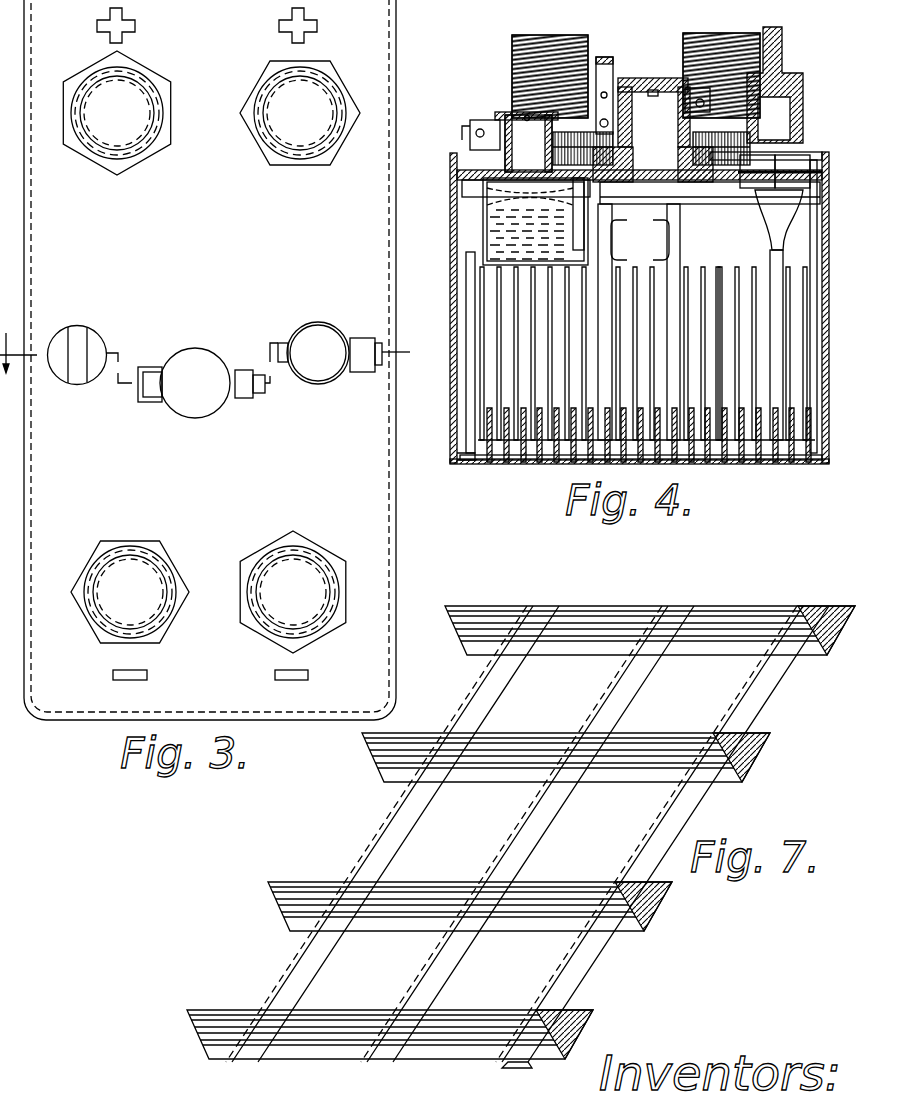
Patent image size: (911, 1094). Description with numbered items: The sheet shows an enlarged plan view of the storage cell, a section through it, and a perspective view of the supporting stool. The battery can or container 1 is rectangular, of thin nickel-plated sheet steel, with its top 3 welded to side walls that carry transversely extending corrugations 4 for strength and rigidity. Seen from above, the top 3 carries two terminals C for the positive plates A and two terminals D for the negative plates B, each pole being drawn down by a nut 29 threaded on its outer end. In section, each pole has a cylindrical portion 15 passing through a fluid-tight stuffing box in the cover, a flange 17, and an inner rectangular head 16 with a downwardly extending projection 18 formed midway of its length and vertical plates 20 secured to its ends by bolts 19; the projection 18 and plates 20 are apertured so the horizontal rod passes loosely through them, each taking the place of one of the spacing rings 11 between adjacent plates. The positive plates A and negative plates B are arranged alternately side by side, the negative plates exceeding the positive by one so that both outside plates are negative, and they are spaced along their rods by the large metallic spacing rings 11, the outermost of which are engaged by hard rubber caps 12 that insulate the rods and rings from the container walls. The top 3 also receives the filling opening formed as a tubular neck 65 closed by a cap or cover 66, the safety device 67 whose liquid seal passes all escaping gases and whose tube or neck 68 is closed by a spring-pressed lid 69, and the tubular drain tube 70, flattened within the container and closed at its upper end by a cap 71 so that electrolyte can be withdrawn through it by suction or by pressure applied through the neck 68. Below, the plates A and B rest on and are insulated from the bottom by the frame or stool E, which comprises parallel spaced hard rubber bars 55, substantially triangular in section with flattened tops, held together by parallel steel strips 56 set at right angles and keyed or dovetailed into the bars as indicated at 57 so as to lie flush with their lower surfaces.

In FIG. 3, the battery can or container 1 is at (396, 572).
In FIG. 4, the battery can or container 1 is at (830, 430).
In FIG. 3, the top 3 is at (342, 474).
In FIG. 4, the top 3 is at (467, 160).
In FIG. 3, the corrugations 4 is at (214, 353).
In FIG. 4, the spacing rings 11 is at (485, 359).
In FIG. 4, the hard rubber caps 12 is at (465, 423).
In FIG. 4, the cylindrical portion 15 is at (512, 38).
In FIG. 4, the rectangular head 16 is at (710, 214).
In FIG. 4, the flange 17 is at (688, 208).
In FIG. 4, the downwardly extending projection 18 is at (723, 272).
In FIG. 4, the bolts 19 is at (622, 238).
In FIG. 4, the vertical plates 20 is at (505, 279).
In FIG. 3, the nut 29 is at (258, 142).
In FIG. 7, the bars 55 is at (723, 656).
In FIG. 7, the steel strips 56 is at (472, 822).
In FIG. 7, the keyed or dovetailed joint 57 is at (533, 1062).
In FIG. 4, the tubular neck 65 is at (633, 164).
In FIG. 3, the cap or cover 66 is at (197, 351).
In FIG. 4, the cap or cover 66 is at (674, 78).
In FIG. 4, the safety device 67 is at (483, 213).
In FIG. 4, the tube or neck 68 is at (526, 142).
In FIG. 3, the lid or cover 69 is at (317, 327).
In FIG. 4, the lid or cover 69 is at (500, 116).
In FIG. 4, the tubular member or drain tube 70 is at (780, 202).
In FIG. 3, the cap 71 is at (79, 335).
In FIG. 4, the cap 71 is at (787, 66).
In FIG. 4, the positive elements or plates A is at (488, 463).
In FIG. 4, the negative elements or plates B is at (477, 466).
In FIG. 3, the terminals for positive plates C is at (280, 107).
In FIG. 3, the terminals for negative plates D is at (150, 612).
In FIG. 4, the terminals for negative plates D is at (588, 45).
In FIG. 7, the frame or stool E is at (652, 699).